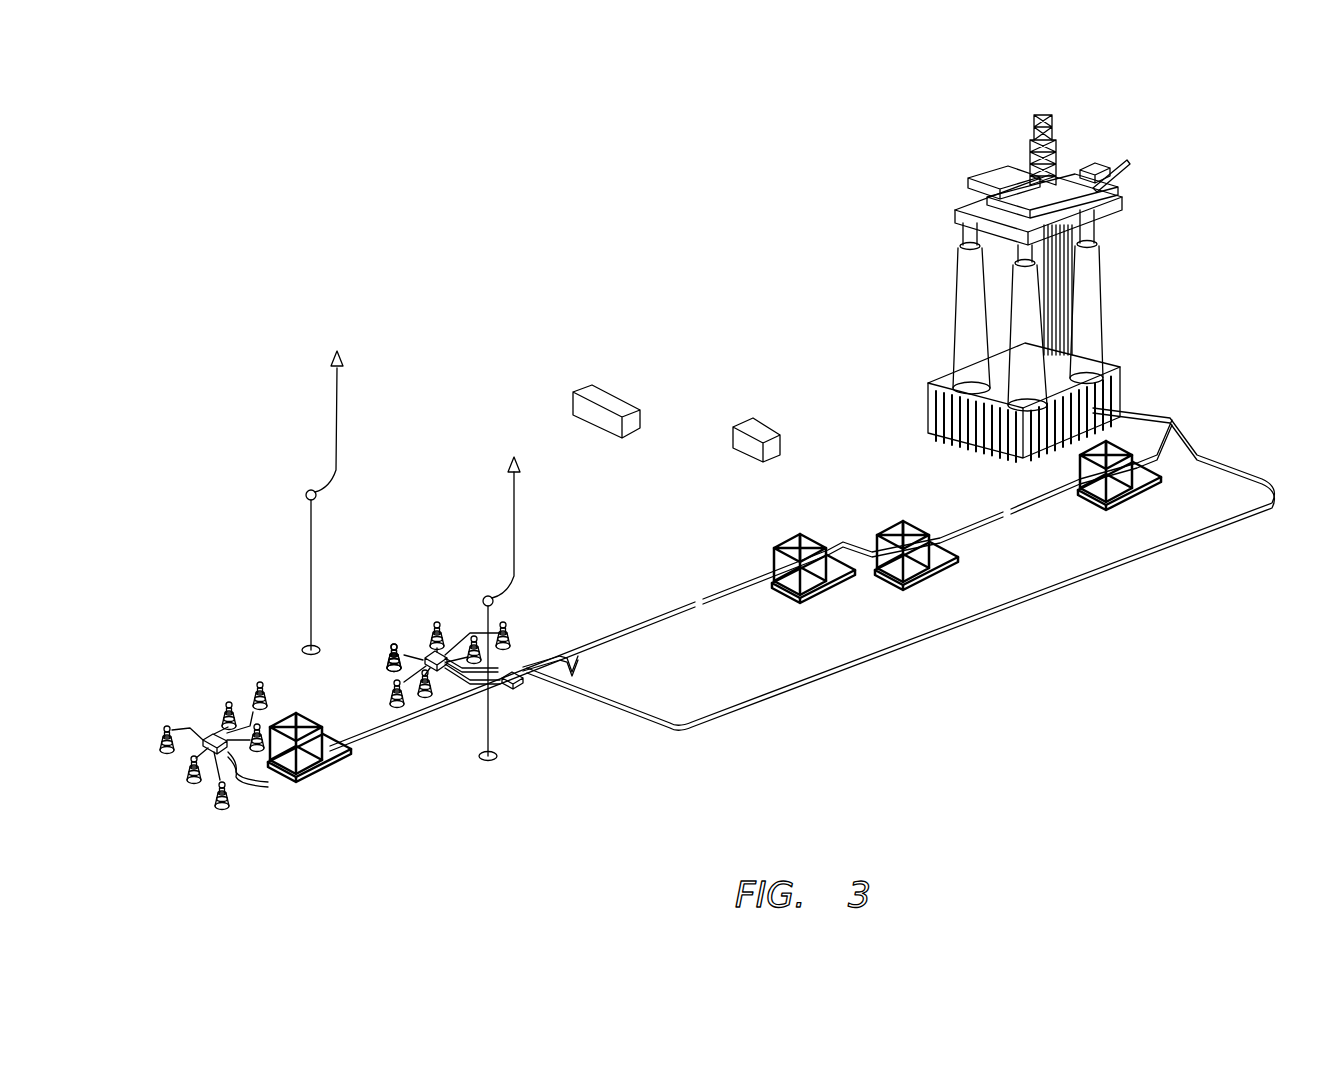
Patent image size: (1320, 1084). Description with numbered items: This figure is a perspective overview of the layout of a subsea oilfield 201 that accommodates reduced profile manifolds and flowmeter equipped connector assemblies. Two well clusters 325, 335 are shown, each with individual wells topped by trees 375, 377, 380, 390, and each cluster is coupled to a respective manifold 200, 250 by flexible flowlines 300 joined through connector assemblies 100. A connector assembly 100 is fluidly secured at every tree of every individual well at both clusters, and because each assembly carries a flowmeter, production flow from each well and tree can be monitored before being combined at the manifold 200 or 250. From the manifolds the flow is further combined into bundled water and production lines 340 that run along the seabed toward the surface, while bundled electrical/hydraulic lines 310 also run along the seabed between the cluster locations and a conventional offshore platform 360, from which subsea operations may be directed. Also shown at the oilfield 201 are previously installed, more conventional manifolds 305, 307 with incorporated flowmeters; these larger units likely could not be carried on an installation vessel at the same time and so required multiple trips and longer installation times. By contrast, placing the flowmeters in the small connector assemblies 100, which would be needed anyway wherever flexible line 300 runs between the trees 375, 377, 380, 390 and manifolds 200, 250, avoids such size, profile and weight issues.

The connector assembly 100 is at (163, 725).
The manifold 200 is at (205, 735).
The subsea oilfield 201 is at (705, 448).
The manifold 250 is at (427, 653).
The flexible flowline 300 is at (233, 702).
The conventional manifold 305 is at (618, 398).
The conventional manifold 307 is at (760, 420).
The bundled electrical/hydraulic lines 310 is at (1190, 540).
The well cluster 325 is at (520, 627).
The well cluster 335 is at (168, 788).
The bundled water and production lines 340 is at (740, 588).
The offshore platform 360 is at (1170, 205).
The tree 375 is at (388, 652).
The tree 377 is at (390, 694).
The tree 380 is at (274, 690).
The tree 390 is at (182, 768).